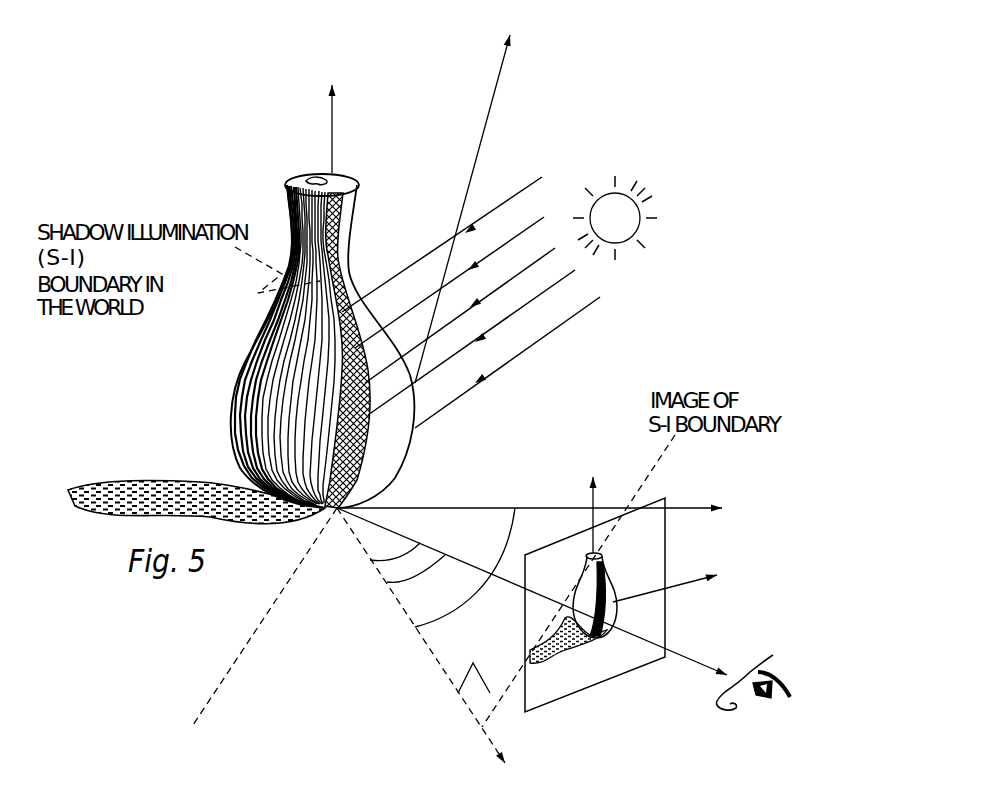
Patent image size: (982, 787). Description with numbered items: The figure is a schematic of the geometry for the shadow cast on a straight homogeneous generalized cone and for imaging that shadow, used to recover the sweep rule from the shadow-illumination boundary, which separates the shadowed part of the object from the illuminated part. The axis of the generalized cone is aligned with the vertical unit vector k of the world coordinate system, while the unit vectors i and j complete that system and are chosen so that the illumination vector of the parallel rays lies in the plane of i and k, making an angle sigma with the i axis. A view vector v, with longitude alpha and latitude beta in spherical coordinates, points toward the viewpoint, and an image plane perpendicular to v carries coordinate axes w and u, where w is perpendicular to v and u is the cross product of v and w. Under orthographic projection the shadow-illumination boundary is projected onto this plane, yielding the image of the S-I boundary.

The i unit vector i is at (757, 477).
The j unit vector j is at (529, 4).
The k unit vector k is at (352, 50).
The u image plane coordinate axis u is at (610, 452).
The view vector v is at (757, 636).
The w image plane coordinate axis w is at (727, 545).